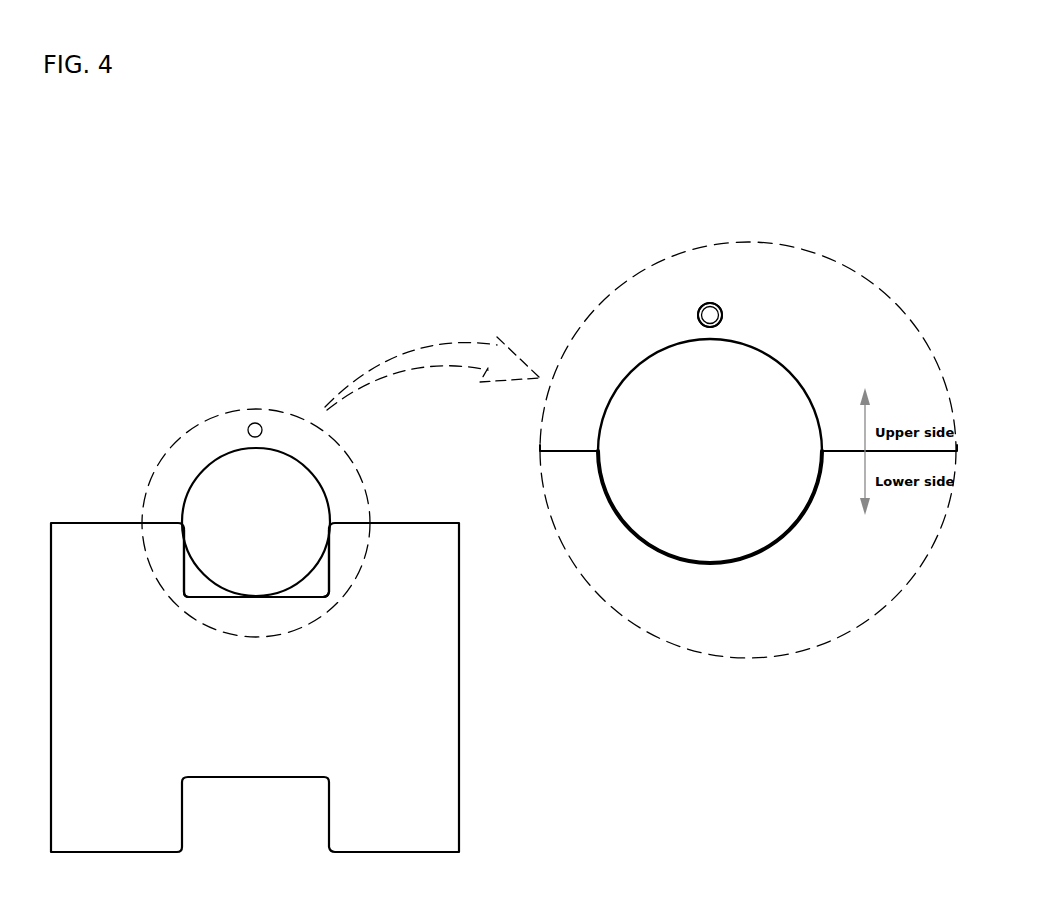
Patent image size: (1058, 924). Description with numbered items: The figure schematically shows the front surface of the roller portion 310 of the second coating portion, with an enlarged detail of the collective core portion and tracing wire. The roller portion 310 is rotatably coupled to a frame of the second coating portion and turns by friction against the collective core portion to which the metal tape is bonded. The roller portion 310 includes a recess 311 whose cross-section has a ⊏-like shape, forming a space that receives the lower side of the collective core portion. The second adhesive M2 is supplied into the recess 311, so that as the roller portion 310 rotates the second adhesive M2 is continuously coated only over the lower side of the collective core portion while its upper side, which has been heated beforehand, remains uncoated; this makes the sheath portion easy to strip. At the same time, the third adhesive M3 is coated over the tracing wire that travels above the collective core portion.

The roller portion 310 is at (435, 688).
The recess 311 is at (332, 568).
The second adhesive M2 is at (788, 535).
The third adhesive M3 is at (720, 304).